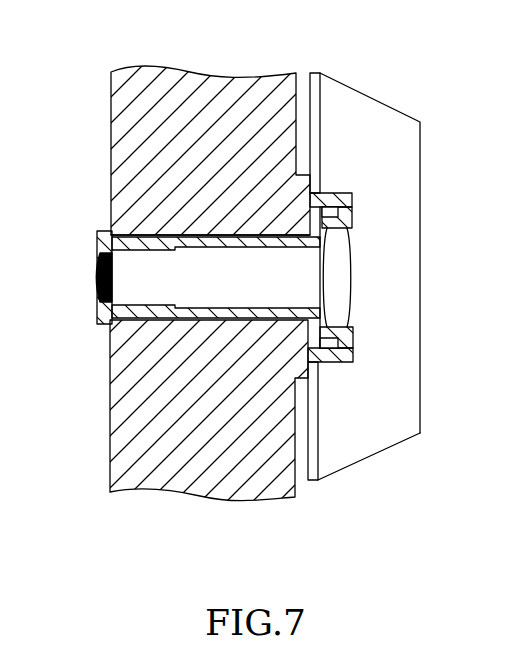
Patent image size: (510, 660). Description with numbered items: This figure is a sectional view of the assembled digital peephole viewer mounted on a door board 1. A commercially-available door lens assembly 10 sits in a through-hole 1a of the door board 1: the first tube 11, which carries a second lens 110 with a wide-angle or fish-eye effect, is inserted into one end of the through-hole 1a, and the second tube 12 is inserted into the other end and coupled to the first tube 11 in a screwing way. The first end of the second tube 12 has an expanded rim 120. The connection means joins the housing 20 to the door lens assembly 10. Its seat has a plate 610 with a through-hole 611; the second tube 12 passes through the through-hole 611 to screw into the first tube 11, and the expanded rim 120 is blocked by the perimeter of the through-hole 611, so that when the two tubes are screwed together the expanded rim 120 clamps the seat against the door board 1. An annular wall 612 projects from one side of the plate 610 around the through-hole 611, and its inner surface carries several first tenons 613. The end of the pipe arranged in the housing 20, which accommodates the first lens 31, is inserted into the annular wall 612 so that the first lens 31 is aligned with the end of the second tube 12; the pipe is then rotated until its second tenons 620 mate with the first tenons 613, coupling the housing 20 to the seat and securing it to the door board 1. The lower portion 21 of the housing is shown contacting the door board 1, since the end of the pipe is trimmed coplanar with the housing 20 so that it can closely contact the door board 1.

The door board 1 is at (210, 100).
The through-hole 1a is at (190, 233).
The door lens assembly 10 is at (181, 269).
The first tube 11 is at (118, 232).
The second tube 12 is at (173, 322).
The housing 20 is at (405, 142).
The lower portion of cover body 21 is at (393, 385).
The first lens 31 is at (342, 283).
The second lens 110 is at (97, 262).
The expanded rim 120 is at (354, 326).
The plate 610 is at (314, 196).
The through-hole 611 is at (310, 323).
The annular wall 612 is at (327, 203).
The first tenons 613 is at (354, 208).
The second tenons 620 is at (341, 217).